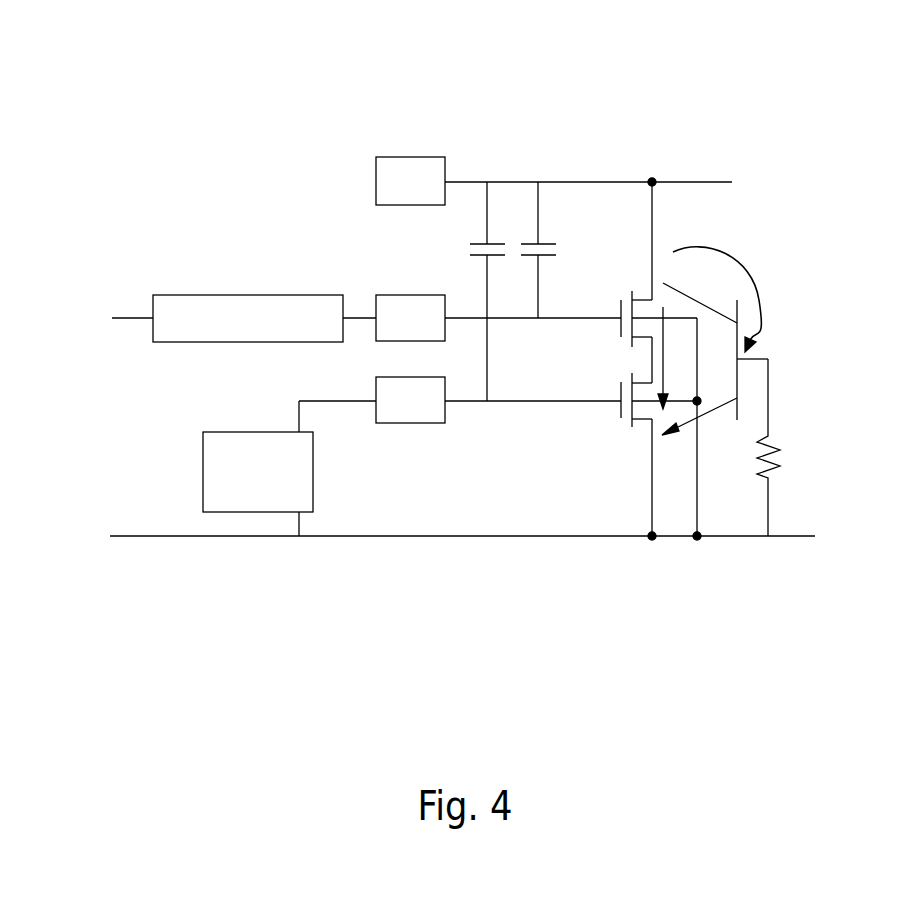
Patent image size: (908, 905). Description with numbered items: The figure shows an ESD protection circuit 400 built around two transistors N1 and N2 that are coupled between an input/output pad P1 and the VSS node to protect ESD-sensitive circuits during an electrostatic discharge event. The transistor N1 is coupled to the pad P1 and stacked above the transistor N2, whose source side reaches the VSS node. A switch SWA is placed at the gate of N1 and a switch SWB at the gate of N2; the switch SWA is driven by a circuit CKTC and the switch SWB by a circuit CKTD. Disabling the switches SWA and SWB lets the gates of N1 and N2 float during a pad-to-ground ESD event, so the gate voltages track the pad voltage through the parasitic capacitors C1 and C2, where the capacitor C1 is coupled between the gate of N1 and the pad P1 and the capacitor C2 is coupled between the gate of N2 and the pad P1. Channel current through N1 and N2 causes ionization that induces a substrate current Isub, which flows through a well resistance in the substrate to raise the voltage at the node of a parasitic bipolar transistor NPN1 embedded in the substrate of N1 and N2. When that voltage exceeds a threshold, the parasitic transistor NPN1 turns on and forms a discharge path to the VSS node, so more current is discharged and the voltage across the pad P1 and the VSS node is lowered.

The ESD protection circuit 400 is at (818, 65).
The pad P1 is at (554, 181).
The parasitic capacitor C1 is at (557, 250).
The parasitic capacitor C2 is at (469, 291).
The circuit CKTC is at (244, 318).
The circuit CKTD is at (258, 468).
The switch SWA is at (498, 318).
The switch SWB is at (460, 400).
The transistor N1 is at (675, 359).
The transistor N2 is at (657, 454).
The parasitic NPN bipolar transistor NPN1 is at (755, 418).
The substrate current Isub is at (742, 299).
The VSS node VSS is at (462, 551).